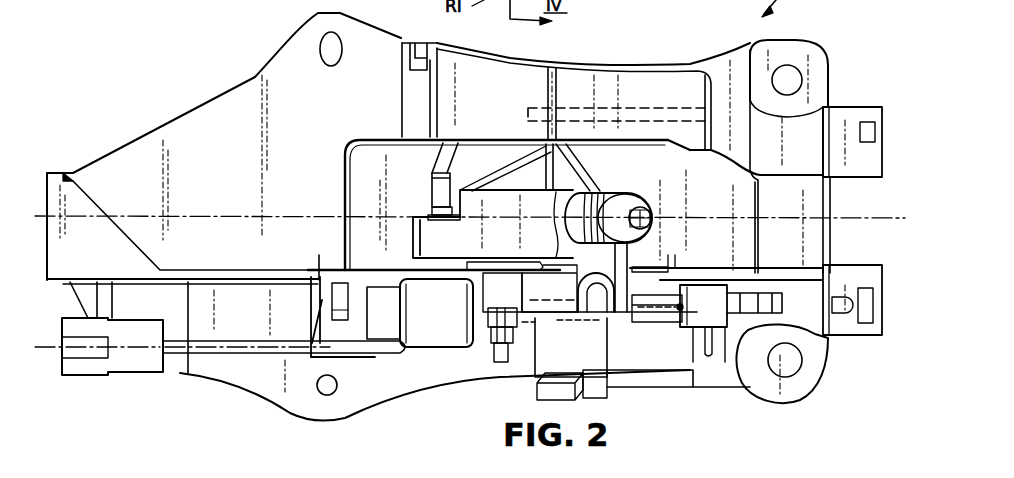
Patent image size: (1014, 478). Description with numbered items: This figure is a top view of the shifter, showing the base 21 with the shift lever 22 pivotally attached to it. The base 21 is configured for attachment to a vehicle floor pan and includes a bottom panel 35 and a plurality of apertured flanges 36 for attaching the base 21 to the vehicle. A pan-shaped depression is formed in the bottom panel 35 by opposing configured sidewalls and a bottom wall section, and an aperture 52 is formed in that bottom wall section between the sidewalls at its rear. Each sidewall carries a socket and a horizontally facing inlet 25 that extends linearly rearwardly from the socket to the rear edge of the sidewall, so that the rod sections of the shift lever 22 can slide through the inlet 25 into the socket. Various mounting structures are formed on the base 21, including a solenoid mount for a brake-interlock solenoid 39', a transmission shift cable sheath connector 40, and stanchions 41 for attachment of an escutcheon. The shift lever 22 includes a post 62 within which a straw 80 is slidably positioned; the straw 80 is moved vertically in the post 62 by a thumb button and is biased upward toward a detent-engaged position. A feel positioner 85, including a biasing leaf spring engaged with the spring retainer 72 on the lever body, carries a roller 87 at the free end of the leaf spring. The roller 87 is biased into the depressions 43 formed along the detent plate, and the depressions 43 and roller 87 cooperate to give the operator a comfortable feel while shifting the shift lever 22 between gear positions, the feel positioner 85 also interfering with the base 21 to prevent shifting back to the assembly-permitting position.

The base 21 is at (118, 148).
The shift lever 22 is at (525, 237).
The inlet 25 is at (600, 108).
The bottom panel 35 is at (367, 182).
The apertured flanges 36 is at (322, 13).
The brake-interlock solenoid 39' is at (392, 350).
The transmission shift cable sheath connector 40 is at (128, 377).
The stanchions 41 is at (843, 118).
The depressions 43 is at (748, 314).
The aperture 52 is at (623, 167).
The post 62 is at (641, 200).
The spring retainer 72 is at (600, 283).
The straw 80 is at (653, 218).
The feel positioner 85 is at (638, 322).
The roller 87 is at (725, 330).